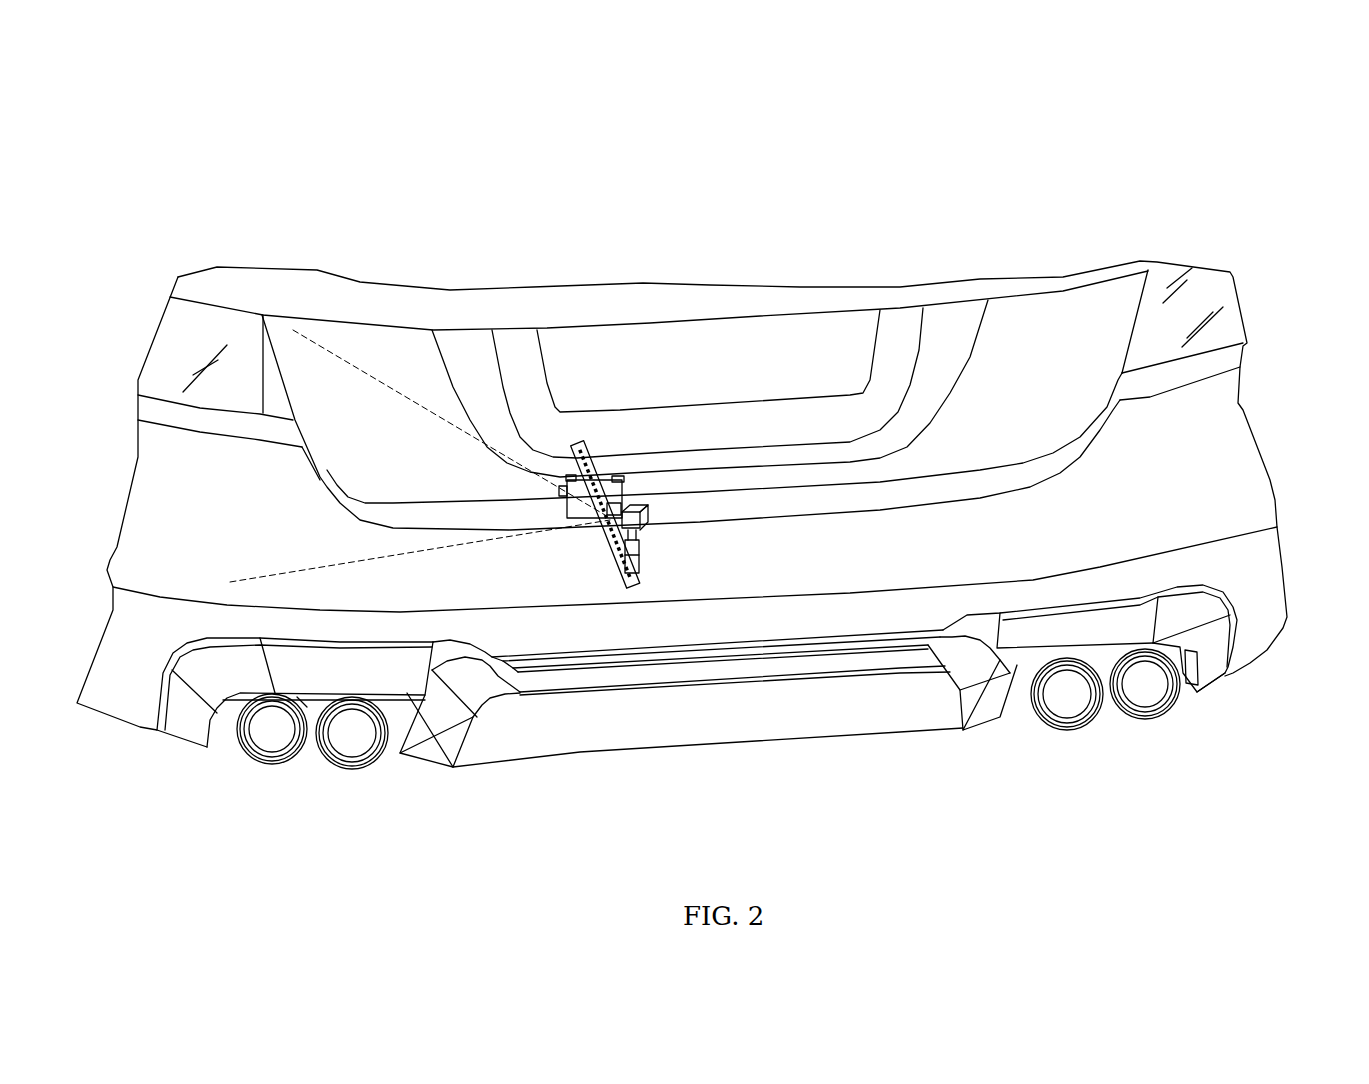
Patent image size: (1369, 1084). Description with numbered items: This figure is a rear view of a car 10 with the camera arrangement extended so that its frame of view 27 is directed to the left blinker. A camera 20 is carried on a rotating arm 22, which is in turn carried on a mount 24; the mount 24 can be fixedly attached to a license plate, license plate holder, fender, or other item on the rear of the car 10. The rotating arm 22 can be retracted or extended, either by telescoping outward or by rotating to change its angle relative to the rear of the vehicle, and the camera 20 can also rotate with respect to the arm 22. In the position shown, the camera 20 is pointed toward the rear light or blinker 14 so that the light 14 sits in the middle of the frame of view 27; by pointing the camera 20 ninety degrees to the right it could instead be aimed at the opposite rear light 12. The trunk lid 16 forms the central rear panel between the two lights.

The car 10 is at (1227, 470).
The rear light 12 is at (1202, 303).
The rear light or blinker 14 is at (207, 373).
The trunk lid 16 is at (803, 343).
The camera 20 is at (640, 532).
The rotating arm 22 is at (577, 460).
The mount 24 is at (617, 477).
The frame of view 27 is at (327, 343).